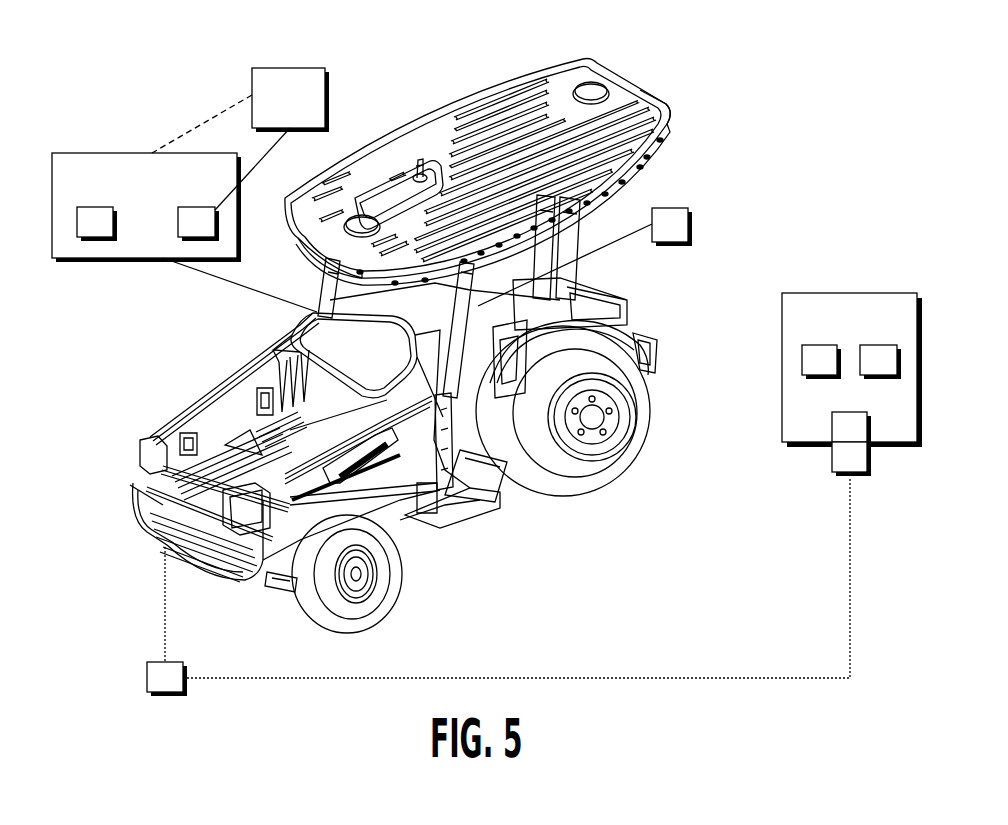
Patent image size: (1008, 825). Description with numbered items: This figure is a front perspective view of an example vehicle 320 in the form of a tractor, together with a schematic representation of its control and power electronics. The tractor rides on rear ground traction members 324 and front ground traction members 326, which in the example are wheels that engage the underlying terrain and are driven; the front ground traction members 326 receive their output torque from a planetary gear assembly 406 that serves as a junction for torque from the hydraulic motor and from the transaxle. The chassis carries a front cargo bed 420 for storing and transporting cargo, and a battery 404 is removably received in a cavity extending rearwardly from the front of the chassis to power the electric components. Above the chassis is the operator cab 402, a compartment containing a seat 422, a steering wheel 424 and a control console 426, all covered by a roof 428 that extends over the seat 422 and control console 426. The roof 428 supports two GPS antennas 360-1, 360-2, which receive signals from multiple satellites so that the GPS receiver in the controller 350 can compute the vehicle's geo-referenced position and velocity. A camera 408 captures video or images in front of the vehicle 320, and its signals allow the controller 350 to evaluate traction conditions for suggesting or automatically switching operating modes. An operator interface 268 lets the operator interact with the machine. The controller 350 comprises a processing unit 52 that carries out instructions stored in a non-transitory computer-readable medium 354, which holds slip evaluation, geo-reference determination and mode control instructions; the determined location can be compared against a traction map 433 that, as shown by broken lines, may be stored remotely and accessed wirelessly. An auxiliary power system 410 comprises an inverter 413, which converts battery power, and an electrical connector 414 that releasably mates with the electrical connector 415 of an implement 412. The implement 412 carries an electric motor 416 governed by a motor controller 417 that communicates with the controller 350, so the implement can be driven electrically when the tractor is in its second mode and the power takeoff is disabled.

The vehicle 320 is at (134, 47).
The controller 350 is at (162, 210).
The processing unit 52 is at (66, 212).
The non-transitory computer-readable medium 354 is at (176, 216).
The traction map 433 is at (240, 112).
The operator cab 402 is at (509, 172).
The GPS antenna 360-1 is at (366, 167).
The GPS antenna 360-2 is at (608, 64).
The roof 428 is at (670, 83).
The camera 408 is at (298, 280).
The seat 422 is at (589, 247).
The steering wheel 424 is at (445, 327).
The control console 426 is at (491, 458).
The operator interface 268 is at (618, 254).
The implement 412 is at (819, 357).
The electric motor 416 is at (889, 314).
The motor controller 417 is at (788, 348).
The electrical connector 415 is at (807, 445).
The electrical connector 414 is at (807, 478).
The inverter 413 is at (169, 714).
The auxiliary power system 410 is at (114, 661).
The front cargo bed 420 is at (393, 430).
The battery 404 is at (275, 609).
The planetary gear assembly 406 is at (463, 525).
The rear ground traction members 324 is at (592, 411).
The front ground traction members 326 is at (370, 574).